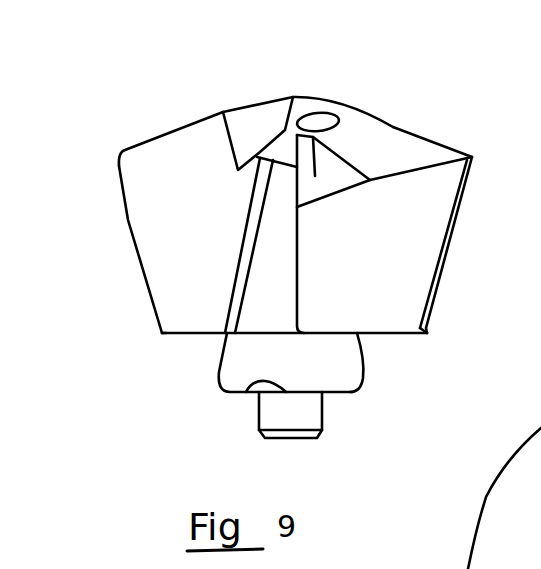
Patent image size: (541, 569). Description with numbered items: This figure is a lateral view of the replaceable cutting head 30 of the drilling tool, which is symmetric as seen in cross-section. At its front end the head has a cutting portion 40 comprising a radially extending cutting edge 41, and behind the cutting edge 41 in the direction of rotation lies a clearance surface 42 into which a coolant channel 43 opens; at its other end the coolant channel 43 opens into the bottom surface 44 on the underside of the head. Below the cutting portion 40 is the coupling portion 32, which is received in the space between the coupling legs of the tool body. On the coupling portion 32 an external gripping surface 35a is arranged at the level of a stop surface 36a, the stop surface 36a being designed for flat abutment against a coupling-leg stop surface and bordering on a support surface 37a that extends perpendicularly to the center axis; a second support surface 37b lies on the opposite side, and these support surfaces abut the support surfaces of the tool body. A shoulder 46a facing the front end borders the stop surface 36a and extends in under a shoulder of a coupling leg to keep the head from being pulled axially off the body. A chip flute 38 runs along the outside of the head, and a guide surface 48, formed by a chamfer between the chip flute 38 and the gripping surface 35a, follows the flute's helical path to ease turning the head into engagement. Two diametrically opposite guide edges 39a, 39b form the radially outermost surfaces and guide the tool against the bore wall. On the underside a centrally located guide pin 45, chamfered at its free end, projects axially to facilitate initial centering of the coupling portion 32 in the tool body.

The cutting head 30 is at (214, 62).
The coupling portion 32 is at (120, 273).
The external gripping surface 35a is at (277, 226).
The stop surface 36a is at (291, 272).
The support surface 37a is at (398, 337).
The support surface 37b is at (178, 337).
The chip flute 38 is at (180, 288).
The guide edge 39a is at (458, 236).
The guide edge 39b is at (540, 463).
The cutting portion 40 is at (379, 95).
The cutting edge 41 is at (181, 134).
The clearance surface 42 is at (387, 137).
The coolant channel 43 is at (322, 125).
The bottom surface 44 is at (338, 395).
The guide pin 45 is at (314, 420).
The shoulder 46a is at (330, 190).
The guide surface 48 is at (245, 258).